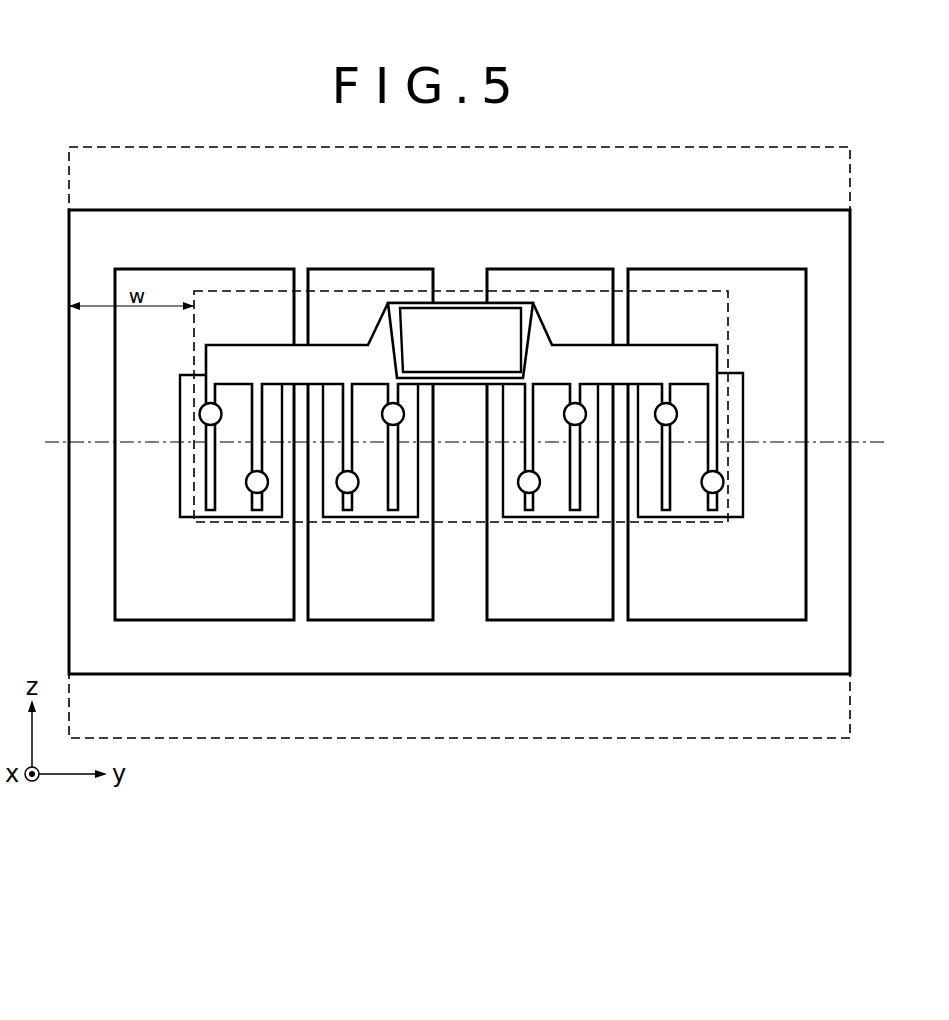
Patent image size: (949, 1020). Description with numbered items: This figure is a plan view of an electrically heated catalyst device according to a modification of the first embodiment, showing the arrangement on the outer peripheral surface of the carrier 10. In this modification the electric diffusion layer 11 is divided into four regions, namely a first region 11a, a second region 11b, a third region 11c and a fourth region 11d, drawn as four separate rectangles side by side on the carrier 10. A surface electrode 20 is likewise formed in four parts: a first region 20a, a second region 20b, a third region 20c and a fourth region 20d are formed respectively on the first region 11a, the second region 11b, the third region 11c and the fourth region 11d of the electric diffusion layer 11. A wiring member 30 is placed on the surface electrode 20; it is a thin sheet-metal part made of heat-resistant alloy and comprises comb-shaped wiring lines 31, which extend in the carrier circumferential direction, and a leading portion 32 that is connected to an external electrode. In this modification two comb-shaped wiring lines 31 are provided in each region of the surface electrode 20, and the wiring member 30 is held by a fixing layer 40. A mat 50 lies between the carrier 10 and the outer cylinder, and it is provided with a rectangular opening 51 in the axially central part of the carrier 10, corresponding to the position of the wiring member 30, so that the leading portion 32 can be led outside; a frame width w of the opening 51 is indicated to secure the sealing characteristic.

The carrier 10 is at (842, 608).
The electric diffusion layer 11 is at (665, 210).
The first region 11a is at (285, 273).
The second region 11b is at (417, 273).
The third region 11c is at (550, 273).
The fourth region 11d is at (637, 273).
The surface electrode 20 is at (255, 683).
The first region 20a is at (278, 512).
The second region 20b is at (328, 512).
The third region 20c is at (514, 512).
The fourth region 20d is at (648, 512).
The wiring member 30 is at (430, 567).
The comb-shaped wiring line 31 is at (393, 511).
The leading portion 32 is at (418, 362).
The fixing layer 40 is at (243, 517).
The mat 50 is at (840, 708).
The opening 51 is at (728, 335).